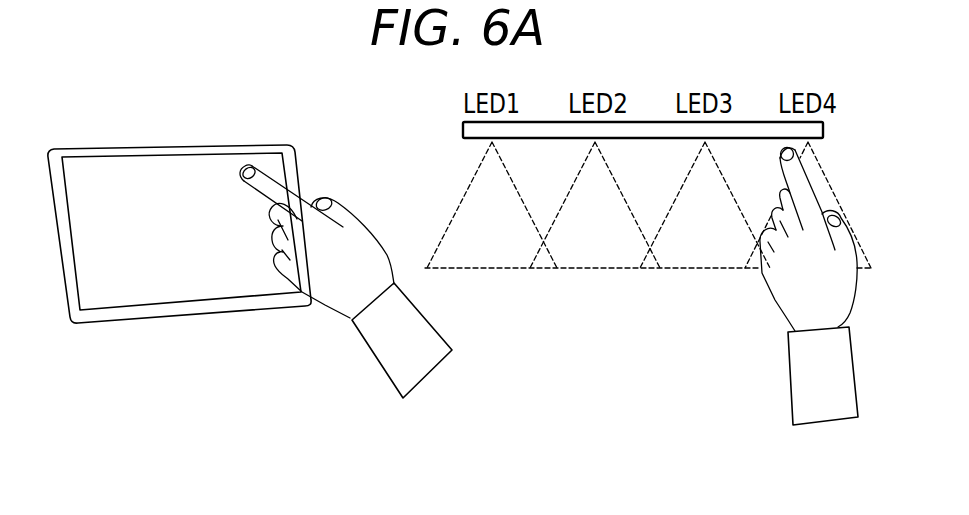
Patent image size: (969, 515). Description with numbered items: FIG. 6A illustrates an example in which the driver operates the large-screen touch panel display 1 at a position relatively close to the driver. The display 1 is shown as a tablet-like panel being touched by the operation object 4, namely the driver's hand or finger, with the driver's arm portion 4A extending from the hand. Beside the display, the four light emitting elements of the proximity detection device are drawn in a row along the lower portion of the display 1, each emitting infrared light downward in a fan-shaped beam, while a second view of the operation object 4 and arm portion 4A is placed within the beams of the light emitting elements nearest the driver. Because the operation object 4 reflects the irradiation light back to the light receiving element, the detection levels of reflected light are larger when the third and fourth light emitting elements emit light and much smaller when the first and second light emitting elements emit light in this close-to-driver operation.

The touch panel display 1 is at (120, 172).
The operation object 4 is at (357, 207).
The arm portion 4A is at (370, 353).